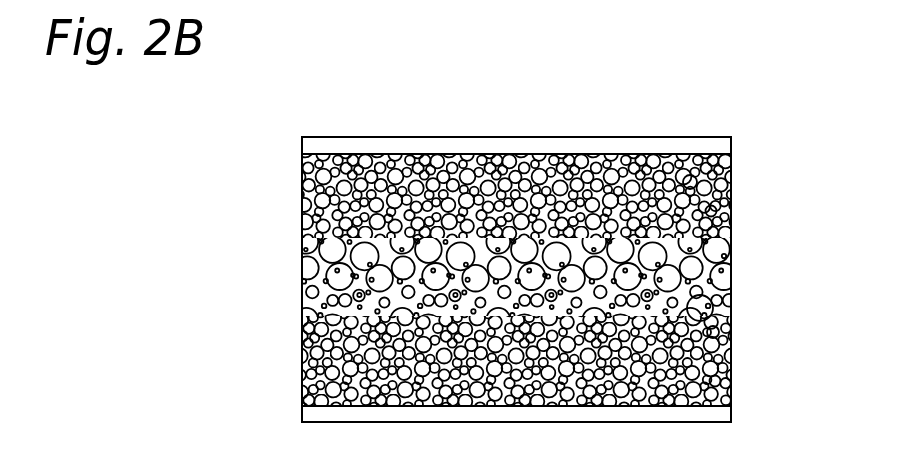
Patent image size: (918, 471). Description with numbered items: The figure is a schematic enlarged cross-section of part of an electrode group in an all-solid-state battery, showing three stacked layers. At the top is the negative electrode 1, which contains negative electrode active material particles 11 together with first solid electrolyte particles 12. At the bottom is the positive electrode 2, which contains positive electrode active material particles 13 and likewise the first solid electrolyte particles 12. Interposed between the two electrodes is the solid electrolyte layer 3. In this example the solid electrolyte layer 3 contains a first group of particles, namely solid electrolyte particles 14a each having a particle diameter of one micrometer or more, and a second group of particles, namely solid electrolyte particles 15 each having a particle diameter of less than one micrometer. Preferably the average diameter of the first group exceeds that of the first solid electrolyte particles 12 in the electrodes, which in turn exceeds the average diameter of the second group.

The negative electrode 1 is at (293, 142).
The positive electrode 2 is at (293, 322).
The solid electrolyte layer 3 is at (293, 243).
The negative electrode active material particles 11 is at (688, 180).
The first solid electrolyte particles 12 is at (710, 212).
The positive electrode active material particles 13 is at (716, 333).
The solid electrolyte particles 14a is at (697, 312).
The solid electrolyte particles 15 is at (726, 256).